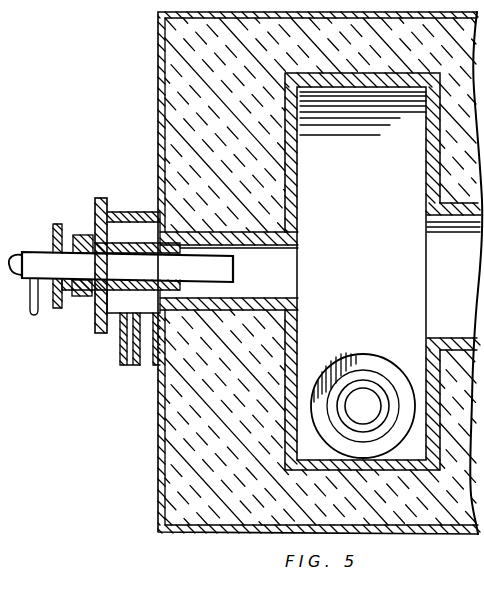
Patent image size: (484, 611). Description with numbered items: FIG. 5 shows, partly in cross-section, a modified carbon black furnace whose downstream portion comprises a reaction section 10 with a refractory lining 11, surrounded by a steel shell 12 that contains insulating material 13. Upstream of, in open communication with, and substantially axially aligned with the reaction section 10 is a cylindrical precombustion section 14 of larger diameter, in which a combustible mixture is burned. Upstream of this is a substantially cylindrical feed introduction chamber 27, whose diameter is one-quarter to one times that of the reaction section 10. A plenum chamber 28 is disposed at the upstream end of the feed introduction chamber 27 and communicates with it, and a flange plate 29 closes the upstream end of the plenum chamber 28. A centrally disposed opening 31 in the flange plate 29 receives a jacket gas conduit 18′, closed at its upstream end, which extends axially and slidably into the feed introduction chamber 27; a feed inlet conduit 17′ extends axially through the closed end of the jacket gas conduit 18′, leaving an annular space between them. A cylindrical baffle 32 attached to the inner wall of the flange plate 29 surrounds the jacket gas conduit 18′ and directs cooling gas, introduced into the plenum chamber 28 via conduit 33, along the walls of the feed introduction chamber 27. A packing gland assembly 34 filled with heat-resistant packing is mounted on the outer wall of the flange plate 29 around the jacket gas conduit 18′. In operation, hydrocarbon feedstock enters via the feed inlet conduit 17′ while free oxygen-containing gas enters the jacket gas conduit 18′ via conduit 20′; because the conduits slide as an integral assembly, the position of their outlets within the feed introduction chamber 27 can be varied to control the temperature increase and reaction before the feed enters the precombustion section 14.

The reaction section 10 is at (461, 287).
The refractory lining 11 is at (300, 228).
The steel shell 12 is at (163, 33).
The insulating material 13 is at (177, 62).
The precombustion section 14 is at (377, 184).
The feed inlet conduit 17′ is at (14, 256).
The jacket gas conduit 18′ is at (40, 251).
The conduit 20′ is at (33, 307).
The feed introduction chamber 27 is at (274, 285).
The plenum chamber 28 is at (137, 232).
The flange plate 29 is at (98, 210).
The centrally disposed opening 31 is at (85, 240).
The cylindrical baffle 32 is at (120, 296).
The conduit 33 is at (120, 351).
The packing gland assembly 34 is at (77, 306).